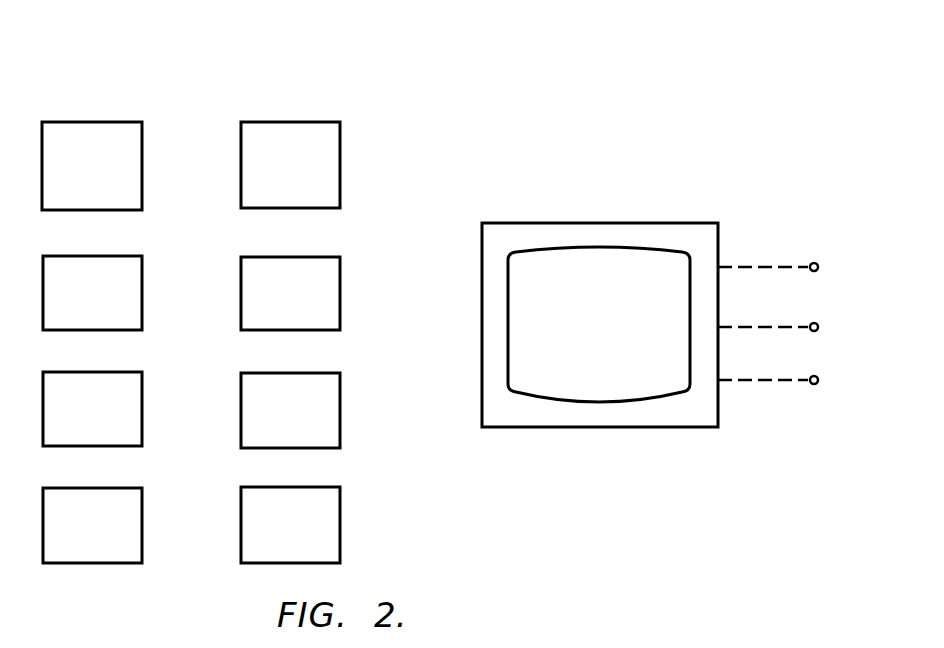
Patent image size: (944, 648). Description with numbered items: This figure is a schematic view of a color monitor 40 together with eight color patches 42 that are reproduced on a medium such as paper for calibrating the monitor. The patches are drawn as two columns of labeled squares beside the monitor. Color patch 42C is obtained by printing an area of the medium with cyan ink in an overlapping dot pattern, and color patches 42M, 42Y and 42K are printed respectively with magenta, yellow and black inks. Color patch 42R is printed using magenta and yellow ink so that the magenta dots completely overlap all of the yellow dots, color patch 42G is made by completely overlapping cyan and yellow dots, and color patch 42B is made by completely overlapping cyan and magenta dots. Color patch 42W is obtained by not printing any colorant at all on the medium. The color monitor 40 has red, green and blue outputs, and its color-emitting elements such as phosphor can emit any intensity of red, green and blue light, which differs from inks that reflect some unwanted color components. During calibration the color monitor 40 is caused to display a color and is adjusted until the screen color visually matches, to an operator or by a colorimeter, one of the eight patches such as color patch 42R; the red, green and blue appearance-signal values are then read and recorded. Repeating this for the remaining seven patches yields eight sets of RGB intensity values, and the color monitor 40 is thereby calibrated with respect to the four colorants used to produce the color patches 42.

The color patches 42 is at (93, 43).
The cyan color patch 42C is at (125, 121).
The magenta color patch 42M is at (129, 255).
The yellow color patch 42Y is at (129, 371).
The black color patch 42K is at (131, 487).
The red color patch 42R is at (311, 121).
The green color patch 42G is at (323, 256).
The blue color patch 42B is at (327, 372).
The white color patch 42W is at (328, 486).
The color monitor 40 is at (644, 222).